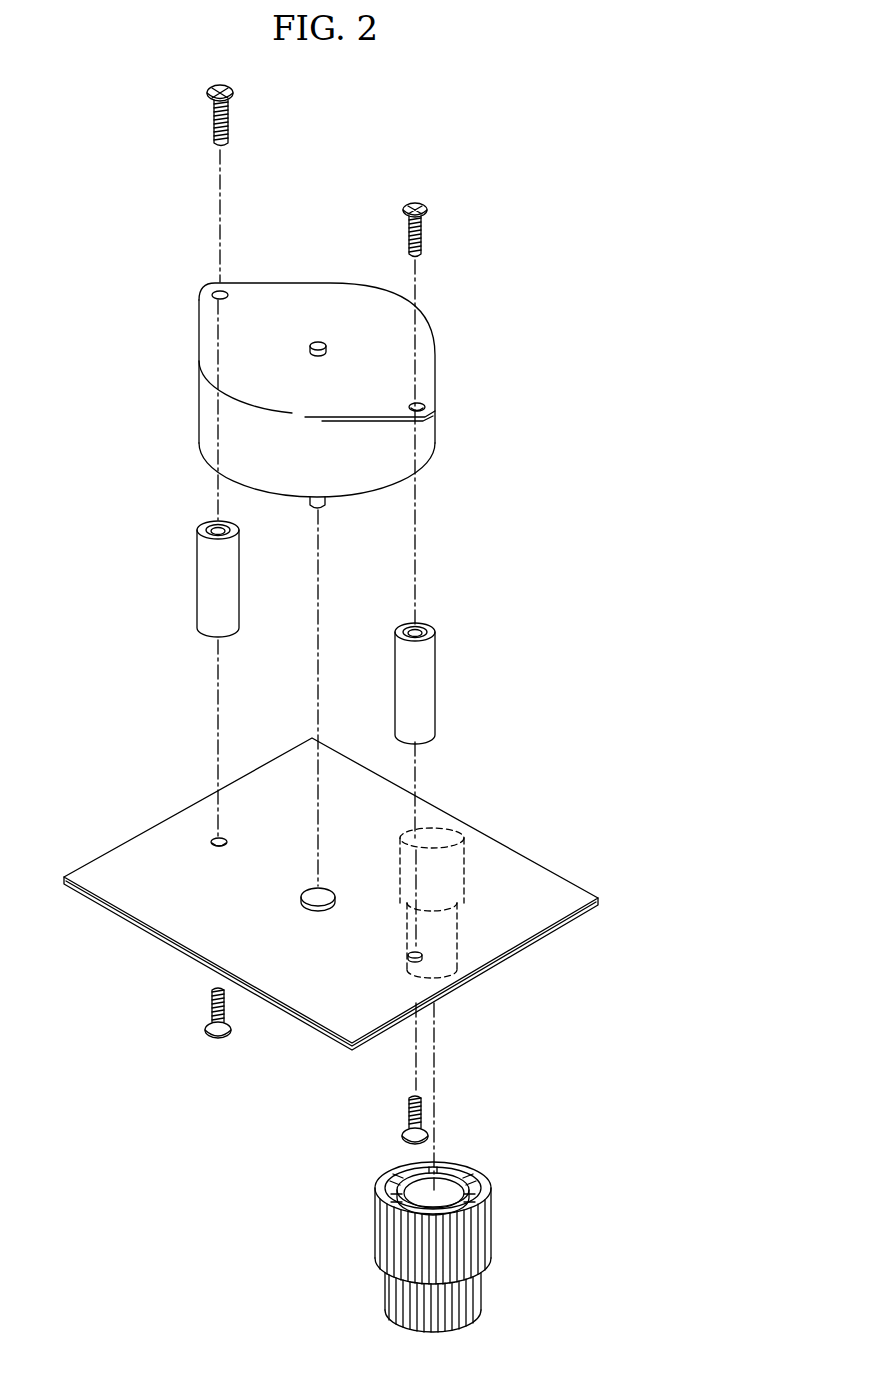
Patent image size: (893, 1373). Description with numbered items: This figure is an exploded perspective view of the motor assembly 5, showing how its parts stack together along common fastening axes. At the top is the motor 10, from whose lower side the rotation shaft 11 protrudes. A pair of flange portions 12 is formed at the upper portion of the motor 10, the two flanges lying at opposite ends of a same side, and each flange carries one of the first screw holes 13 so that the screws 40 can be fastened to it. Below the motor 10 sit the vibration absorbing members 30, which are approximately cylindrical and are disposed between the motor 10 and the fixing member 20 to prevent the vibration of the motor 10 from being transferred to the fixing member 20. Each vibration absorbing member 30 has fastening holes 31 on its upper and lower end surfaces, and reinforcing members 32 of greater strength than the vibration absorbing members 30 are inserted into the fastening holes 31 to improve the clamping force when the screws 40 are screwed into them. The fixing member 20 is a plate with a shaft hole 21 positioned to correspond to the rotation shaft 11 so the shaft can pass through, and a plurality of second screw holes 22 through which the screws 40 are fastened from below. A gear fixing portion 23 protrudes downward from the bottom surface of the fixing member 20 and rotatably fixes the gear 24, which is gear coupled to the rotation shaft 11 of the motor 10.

The motor assembly 5 is at (584, 209).
The motor 10 is at (178, 388).
The rotation shaft 11 is at (322, 504).
The flange portions 12 is at (436, 409).
The first screw holes 13 is at (420, 404).
The fixing member 20 is at (120, 857).
The shaft hole 21 is at (305, 902).
The second screw holes 22 is at (219, 838).
The gear fixing portion 23 is at (462, 886).
The gear 24 is at (484, 1238).
The vibration absorbing members 30 is at (360, 632).
The fastening holes 31 is at (421, 630).
The reinforcing members 32 is at (427, 634).
The screws 40 is at (213, 122).